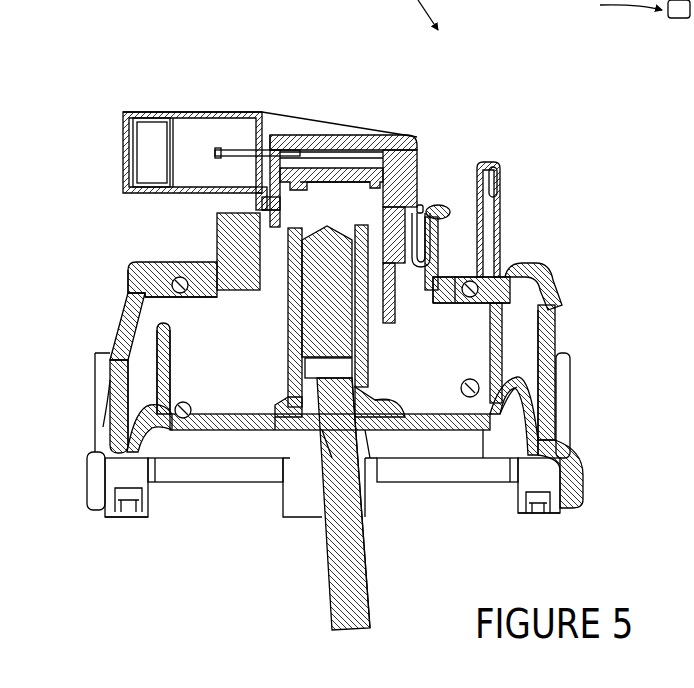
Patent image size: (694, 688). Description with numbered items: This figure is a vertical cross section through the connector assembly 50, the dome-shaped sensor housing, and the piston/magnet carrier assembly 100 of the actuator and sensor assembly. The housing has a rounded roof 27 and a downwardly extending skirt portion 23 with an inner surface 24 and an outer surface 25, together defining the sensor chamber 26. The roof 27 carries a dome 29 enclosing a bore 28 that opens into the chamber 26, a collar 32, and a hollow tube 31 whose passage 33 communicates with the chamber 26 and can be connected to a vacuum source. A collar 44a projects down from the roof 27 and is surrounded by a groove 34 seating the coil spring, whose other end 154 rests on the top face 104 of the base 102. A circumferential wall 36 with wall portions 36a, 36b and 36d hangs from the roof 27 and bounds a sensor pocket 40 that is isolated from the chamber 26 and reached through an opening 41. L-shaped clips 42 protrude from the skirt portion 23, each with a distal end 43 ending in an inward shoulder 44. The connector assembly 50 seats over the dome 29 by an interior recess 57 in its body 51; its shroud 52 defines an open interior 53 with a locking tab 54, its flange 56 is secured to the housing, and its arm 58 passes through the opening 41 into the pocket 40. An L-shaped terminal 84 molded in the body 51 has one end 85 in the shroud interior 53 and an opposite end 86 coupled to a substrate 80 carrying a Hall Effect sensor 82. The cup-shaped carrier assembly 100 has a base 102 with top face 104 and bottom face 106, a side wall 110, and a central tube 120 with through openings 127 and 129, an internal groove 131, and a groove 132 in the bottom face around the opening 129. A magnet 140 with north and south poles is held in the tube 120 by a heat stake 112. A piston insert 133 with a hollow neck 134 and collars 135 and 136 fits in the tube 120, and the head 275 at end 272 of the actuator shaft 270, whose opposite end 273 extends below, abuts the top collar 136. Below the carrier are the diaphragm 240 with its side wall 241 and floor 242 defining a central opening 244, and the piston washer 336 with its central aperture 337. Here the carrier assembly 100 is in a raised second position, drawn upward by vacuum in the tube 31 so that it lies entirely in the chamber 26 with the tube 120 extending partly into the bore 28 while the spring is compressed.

The skirt portion 23 is at (108, 363).
The inner surface 24 is at (128, 412).
The outer surface 25 is at (100, 373).
The sensor cavity 26 is at (540, 295).
The roof 27 is at (173, 277).
The interior bore 28 is at (338, 197).
The dome 29 is at (378, 173).
The hollow tube 31 is at (500, 180).
The collar 32 is at (214, 216).
The interior port 33 is at (492, 165).
The circumferential groove 34 is at (135, 279).
The circumferentially extending wall 36 is at (512, 297).
The side wall portion 36a is at (478, 280).
The side wall portion 36b is at (300, 315).
The wall portion 36d is at (437, 378).
The sensor pocket 40 is at (530, 313).
The opening 41 is at (440, 240).
The clips 42 is at (108, 519).
The distal end 43 is at (115, 477).
The distal shoulder 44 is at (128, 514).
The collar 44a is at (180, 277).
The connector assembly 50 is at (237, 103).
The body 51 is at (278, 133).
The shroud 52 is at (147, 112).
The open interior 53 is at (152, 137).
The locking tab 54 is at (150, 110).
The circumferential flange 56 is at (421, 157).
The interior recess 57 is at (282, 165).
The arm 58 is at (446, 206).
The substrate 80 is at (470, 268).
The sensor 82 is at (470, 287).
The terminals 84 is at (335, 148).
The terminal end 85 is at (218, 150).
The terminal end 86 is at (437, 258).
The piston/magnet carrier assembly 100 is at (150, 348).
The base 102 is at (490, 414).
The top face 104 is at (195, 440).
The bottom face 106 is at (217, 440).
The side wall 110 is at (540, 320).
The heat stake 112 is at (420, 205).
The tube 120 is at (288, 311).
The central through opening 127 is at (262, 210).
The central through opening 129 is at (320, 460).
The circumferential groove 131 is at (288, 374).
The annular groove 132 is at (293, 440).
The piston insert 133 is at (381, 433).
The neck 134 is at (288, 394).
The collar 135 is at (376, 445).
The collar 136 is at (480, 412).
The magnet 140 is at (250, 203).
The spring end 154 is at (118, 293).
The diaphragm 240 is at (533, 369).
The side wall 241 is at (540, 393).
The floor 242 is at (481, 440).
The central opening 244 is at (370, 443).
The actuator shaft 270 is at (328, 613).
The shaft end 272 is at (286, 404).
The shaft end 273 is at (340, 583).
The head 275 is at (288, 347).
The piston washer 336 is at (385, 445).
The central aperture 337 is at (333, 432).